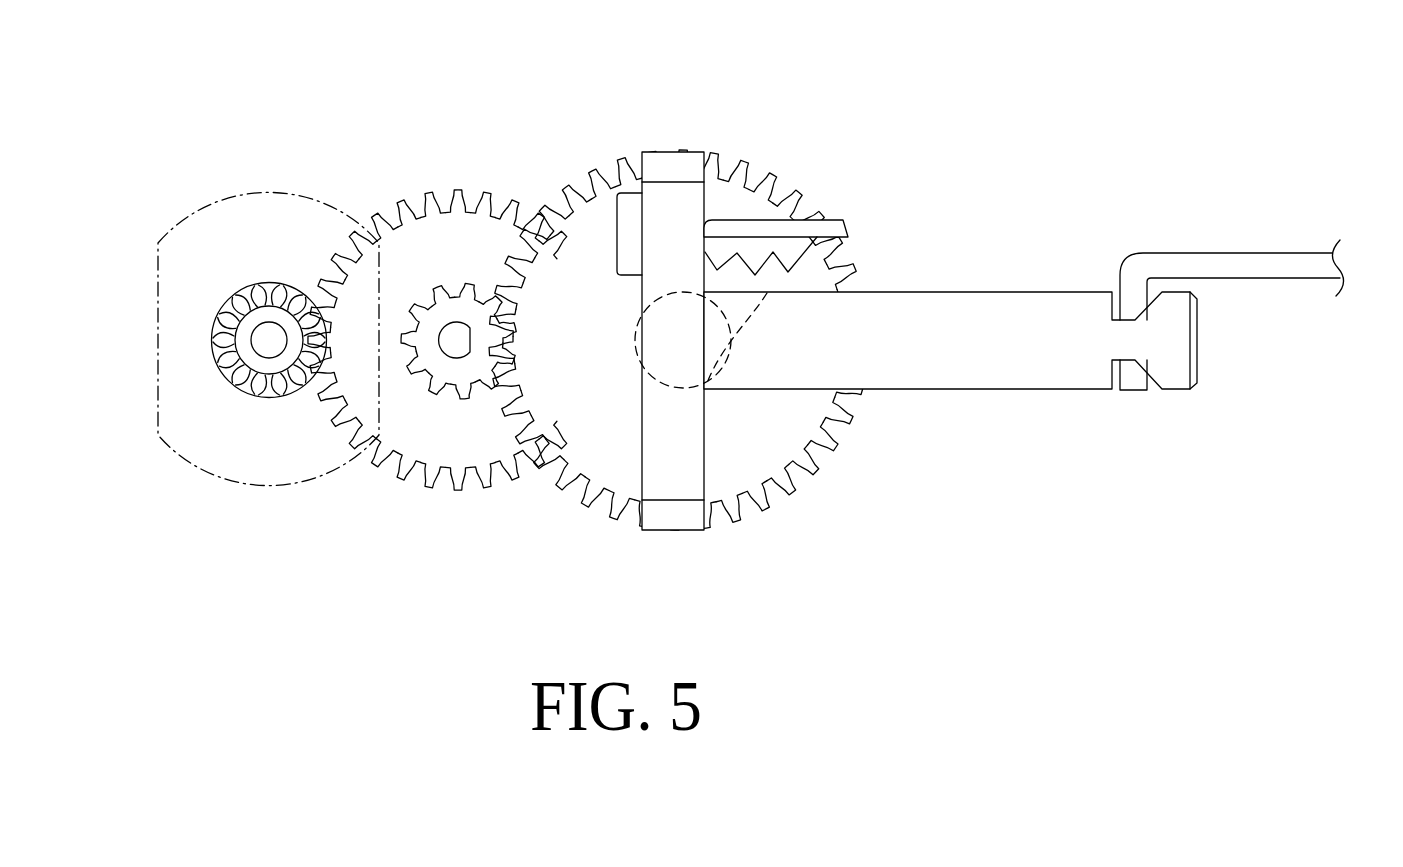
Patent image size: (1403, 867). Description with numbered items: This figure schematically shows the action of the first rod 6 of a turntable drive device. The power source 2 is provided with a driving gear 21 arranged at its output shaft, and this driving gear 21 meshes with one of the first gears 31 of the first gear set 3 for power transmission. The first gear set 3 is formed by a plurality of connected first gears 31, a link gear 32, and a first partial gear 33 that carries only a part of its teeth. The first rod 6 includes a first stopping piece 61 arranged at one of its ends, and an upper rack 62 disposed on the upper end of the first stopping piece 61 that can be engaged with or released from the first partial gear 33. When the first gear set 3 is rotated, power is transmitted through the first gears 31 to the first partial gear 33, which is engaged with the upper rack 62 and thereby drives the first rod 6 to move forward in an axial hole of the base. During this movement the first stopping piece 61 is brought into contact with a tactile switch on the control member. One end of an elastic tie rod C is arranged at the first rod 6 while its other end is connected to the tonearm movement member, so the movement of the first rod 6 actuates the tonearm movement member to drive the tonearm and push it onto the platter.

The power source 2 is at (258, 220).
The driving gear 21 is at (258, 388).
The first gear set 3 is at (598, 295).
The first gears 31 is at (447, 227).
The link gear 32 is at (455, 397).
The first partial gear 33 is at (710, 300).
The first rod 6 is at (966, 320).
The first stopping piece 61 is at (670, 427).
The upper rack 62 is at (797, 237).
The elastic tie rod C is at (1250, 270).